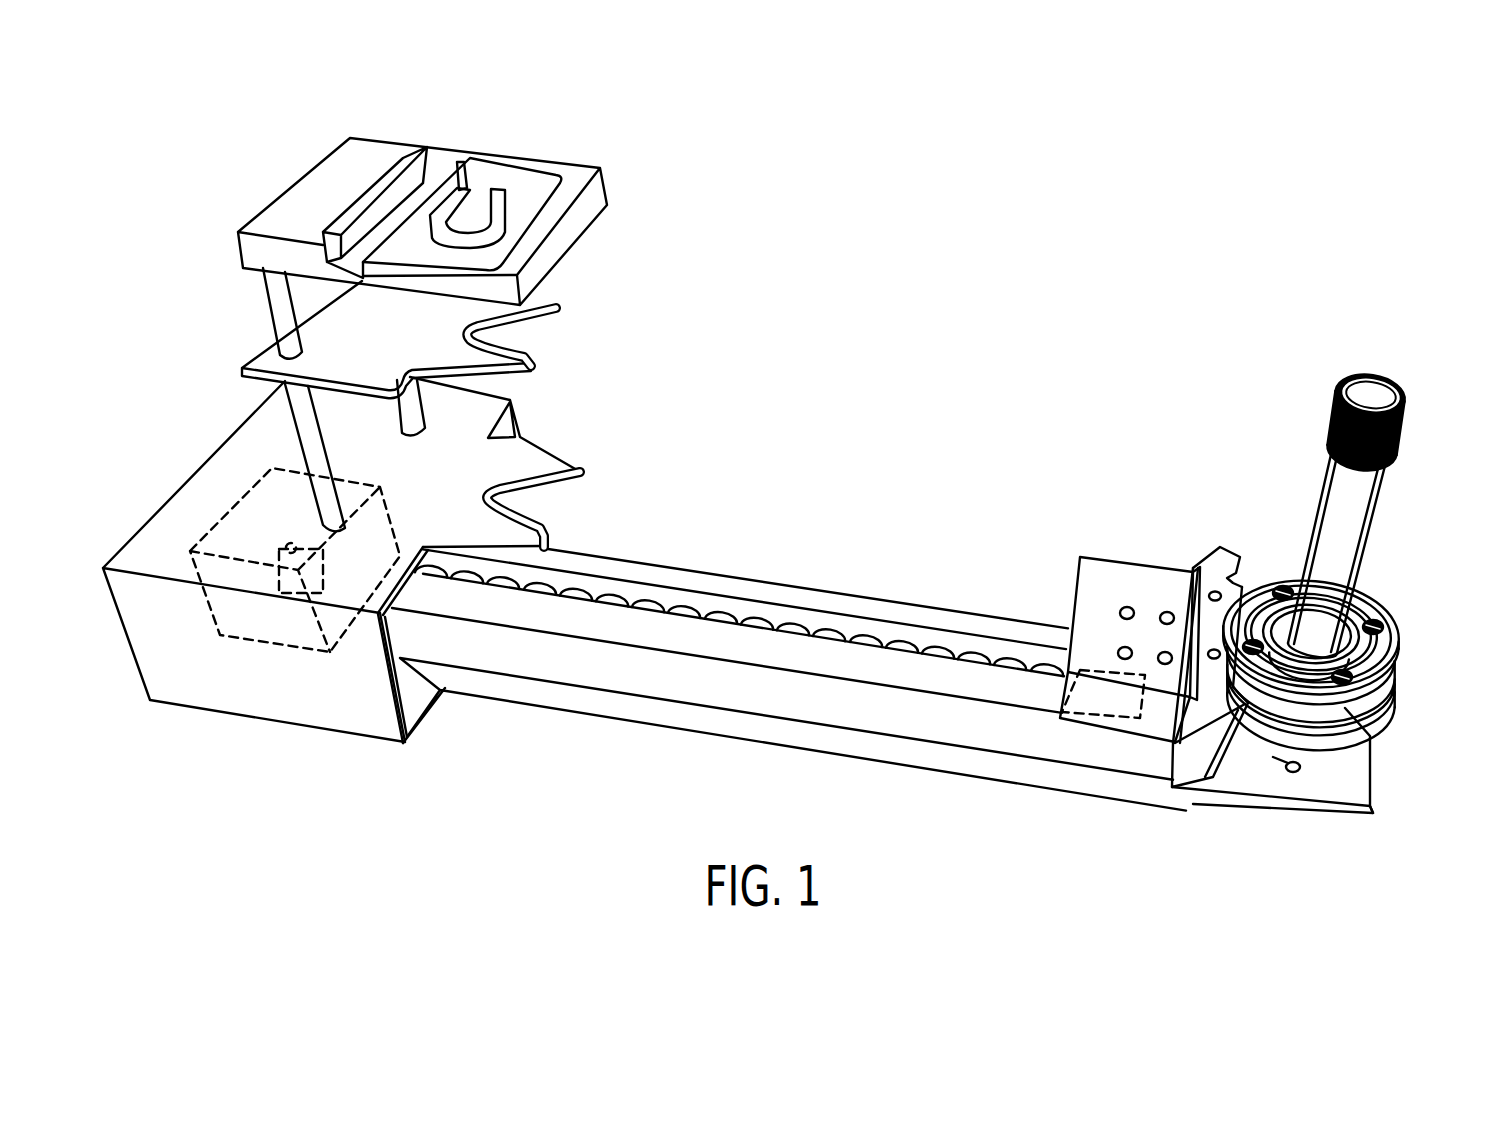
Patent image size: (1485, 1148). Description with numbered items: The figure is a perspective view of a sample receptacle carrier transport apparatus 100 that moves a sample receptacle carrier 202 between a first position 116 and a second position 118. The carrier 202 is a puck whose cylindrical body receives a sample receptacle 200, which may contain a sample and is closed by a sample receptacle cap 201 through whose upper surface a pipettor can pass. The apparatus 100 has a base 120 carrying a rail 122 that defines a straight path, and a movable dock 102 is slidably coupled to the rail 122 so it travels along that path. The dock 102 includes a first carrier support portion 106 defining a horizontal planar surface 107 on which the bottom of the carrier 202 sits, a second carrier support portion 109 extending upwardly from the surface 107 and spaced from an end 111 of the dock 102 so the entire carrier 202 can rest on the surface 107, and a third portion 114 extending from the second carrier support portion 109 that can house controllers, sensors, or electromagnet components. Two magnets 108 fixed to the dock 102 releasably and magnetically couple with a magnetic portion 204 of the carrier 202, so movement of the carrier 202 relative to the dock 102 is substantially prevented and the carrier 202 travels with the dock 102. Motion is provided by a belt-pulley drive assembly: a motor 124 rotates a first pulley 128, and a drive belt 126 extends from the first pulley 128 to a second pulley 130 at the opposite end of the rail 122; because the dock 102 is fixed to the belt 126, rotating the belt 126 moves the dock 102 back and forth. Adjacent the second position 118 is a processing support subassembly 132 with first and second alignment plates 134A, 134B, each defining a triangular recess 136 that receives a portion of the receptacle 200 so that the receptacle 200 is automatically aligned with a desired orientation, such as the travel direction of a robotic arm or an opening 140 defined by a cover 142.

The sample receptacle carrier transport apparatus 100 is at (817, 257).
The movable dock 102 is at (1212, 707).
The first carrier support portion 106 is at (1273, 790).
The surface 107 is at (1281, 824).
The magnets 108 is at (1189, 683).
The second carrier support portion 109 is at (1223, 519).
The end 111 is at (1410, 792).
The third portion 114 is at (1130, 619).
The first position 116 is at (1257, 370).
The second position 118 is at (513, 455).
The base 120 is at (723, 627).
The rail 122 is at (740, 605).
The motor 124 is at (254, 575).
The drive belt 126 is at (793, 734).
The first pulley 128 is at (277, 537).
The second pulley 130 is at (1103, 757).
The processing support subassembly 132 is at (358, 369).
The first alignment plate 134A is at (575, 496).
The second alignment plate 134B is at (552, 324).
The recess 136 is at (571, 440).
The opening 140 is at (467, 166).
The cover 142 is at (422, 317).
The sample receptacle 200 is at (1362, 554).
The sample receptacle cap 201 is at (1395, 420).
The sample receptacle carrier 202 is at (1324, 631).
The magnetic portion 204 is at (1341, 699).